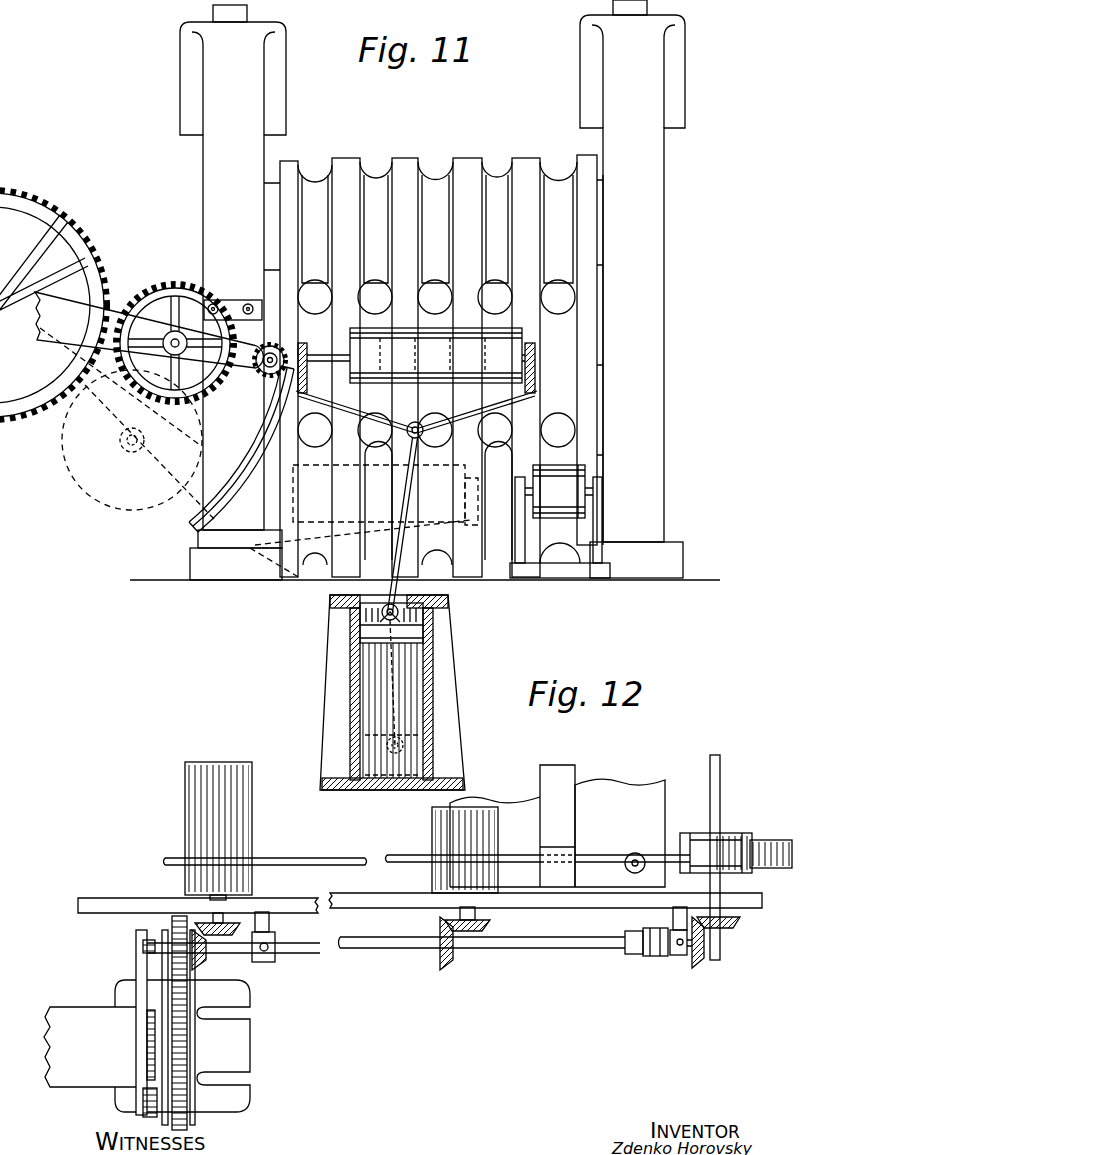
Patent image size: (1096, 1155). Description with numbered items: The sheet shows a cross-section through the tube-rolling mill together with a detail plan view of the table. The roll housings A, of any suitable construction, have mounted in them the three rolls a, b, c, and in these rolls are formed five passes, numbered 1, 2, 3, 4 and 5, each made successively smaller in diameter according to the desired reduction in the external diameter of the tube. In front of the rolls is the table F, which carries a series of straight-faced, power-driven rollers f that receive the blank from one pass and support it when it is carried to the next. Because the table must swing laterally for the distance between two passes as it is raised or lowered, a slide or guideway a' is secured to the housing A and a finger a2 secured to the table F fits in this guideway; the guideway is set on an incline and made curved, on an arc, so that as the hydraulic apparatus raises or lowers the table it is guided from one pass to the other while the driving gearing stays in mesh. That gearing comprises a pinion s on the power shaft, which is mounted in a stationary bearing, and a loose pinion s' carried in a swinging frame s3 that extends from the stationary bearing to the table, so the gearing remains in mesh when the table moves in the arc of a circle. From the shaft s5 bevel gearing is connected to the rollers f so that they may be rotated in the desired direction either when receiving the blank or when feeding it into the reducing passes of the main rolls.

In FIG. 11, the roll housing A is at (205, 182).
In FIG. 12, the roll housing A is at (94, 1047).
In FIG. 11, the roll a is at (441, 366).
In FIG. 11, the guideway a' is at (241, 449).
In FIG. 12, the guideway a' is at (145, 1023).
In FIG. 12, the finger a2 is at (143, 942).
In FIG. 11, the roll b is at (431, 360).
In FIG. 11, the roll c is at (560, 521).
In FIG. 11, the pinion s is at (53, 301).
In FIG. 11, the loose pinion s' is at (175, 315).
In FIG. 11, the swinging frame s3 is at (160, 334).
In FIG. 12, the shaft s5 is at (441, 942).
In FIG. 12, the power-driven roller f is at (252, 825).
In FIG. 12, the table F is at (420, 890).
In FIG. 11, the roll-pass 1 is at (558, 430).
In FIG. 11, the roll-pass 2 is at (495, 297).
In FIG. 11, the roll-pass 3 is at (435, 430).
In FIG. 11, the roll-pass 4 is at (375, 297).
In FIG. 11, the roll-pass 5 is at (315, 430).